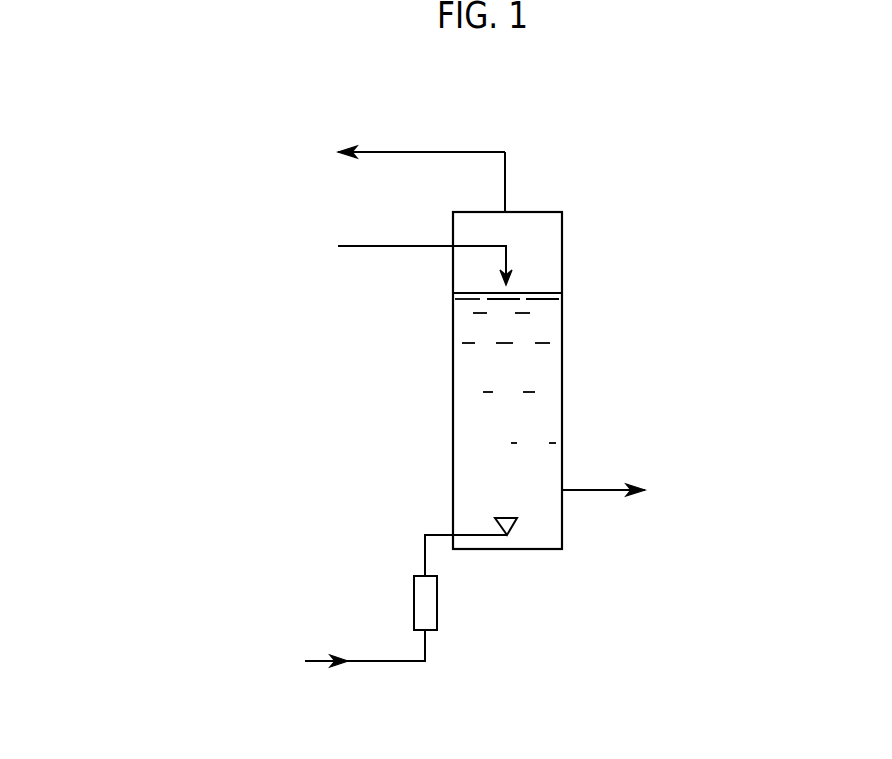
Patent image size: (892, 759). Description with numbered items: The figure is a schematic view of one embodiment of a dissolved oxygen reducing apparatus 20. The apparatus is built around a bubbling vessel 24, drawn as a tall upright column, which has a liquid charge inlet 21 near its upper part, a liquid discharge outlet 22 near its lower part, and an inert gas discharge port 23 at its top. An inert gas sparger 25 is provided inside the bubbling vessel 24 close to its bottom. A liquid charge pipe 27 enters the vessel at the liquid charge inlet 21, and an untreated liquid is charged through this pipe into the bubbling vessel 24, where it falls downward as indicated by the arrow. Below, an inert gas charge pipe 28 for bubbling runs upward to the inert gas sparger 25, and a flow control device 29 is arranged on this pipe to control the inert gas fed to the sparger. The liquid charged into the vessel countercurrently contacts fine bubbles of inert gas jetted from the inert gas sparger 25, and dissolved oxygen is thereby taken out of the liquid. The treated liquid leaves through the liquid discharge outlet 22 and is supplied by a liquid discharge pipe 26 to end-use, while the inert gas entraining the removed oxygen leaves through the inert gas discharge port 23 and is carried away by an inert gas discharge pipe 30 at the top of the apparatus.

The dissolved oxygen reducing apparatus 20 is at (490, 132).
The liquid charge inlet 21 is at (452, 248).
The liquid discharge outlet 22 is at (563, 489).
The inert gas discharge port 23 is at (507, 210).
The bubbling vessel 24 is at (570, 278).
The inert gas sparger 25 is at (507, 518).
The liquid discharge pipe 26 is at (600, 491).
The liquid charge pipe 27 is at (417, 246).
The inert gas charge pipe 28 is at (387, 661).
The flow control device 29 is at (437, 600).
The inert gas discharge pipe 30 is at (380, 152).